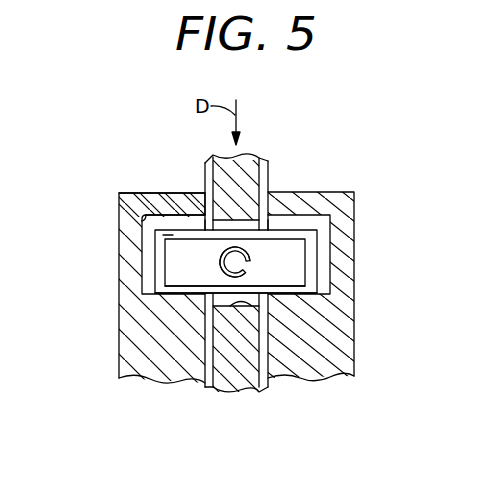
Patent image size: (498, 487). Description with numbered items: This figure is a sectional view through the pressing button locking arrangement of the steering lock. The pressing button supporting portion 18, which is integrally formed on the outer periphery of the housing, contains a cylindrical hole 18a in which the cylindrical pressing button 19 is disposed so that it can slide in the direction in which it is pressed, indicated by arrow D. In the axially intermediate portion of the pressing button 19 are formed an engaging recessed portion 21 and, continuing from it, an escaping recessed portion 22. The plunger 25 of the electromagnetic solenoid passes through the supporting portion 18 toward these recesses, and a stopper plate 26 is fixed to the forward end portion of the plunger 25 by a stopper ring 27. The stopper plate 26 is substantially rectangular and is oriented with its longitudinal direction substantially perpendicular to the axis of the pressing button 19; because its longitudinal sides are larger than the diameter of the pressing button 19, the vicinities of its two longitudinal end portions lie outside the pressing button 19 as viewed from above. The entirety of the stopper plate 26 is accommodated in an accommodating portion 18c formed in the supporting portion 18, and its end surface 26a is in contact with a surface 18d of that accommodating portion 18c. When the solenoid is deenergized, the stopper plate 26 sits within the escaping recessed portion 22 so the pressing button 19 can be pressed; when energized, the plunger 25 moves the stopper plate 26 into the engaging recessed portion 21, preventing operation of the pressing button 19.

The pressing button supporting portion 18 is at (218, 287).
The cylindrical hole 18a is at (206, 357).
The accommodating portion 18c is at (137, 193).
The surface of the accommodating portion 18d is at (143, 294).
The pressing button 19 is at (269, 184).
The engaging recessed portion 21 is at (271, 318).
The escaping recessed portion 22 is at (244, 220).
The plunger 25 is at (315, 237).
The stopper plate 26 is at (227, 273).
The end surface of the stopper plate 26a is at (296, 300).
The stopper ring 27 is at (252, 256).